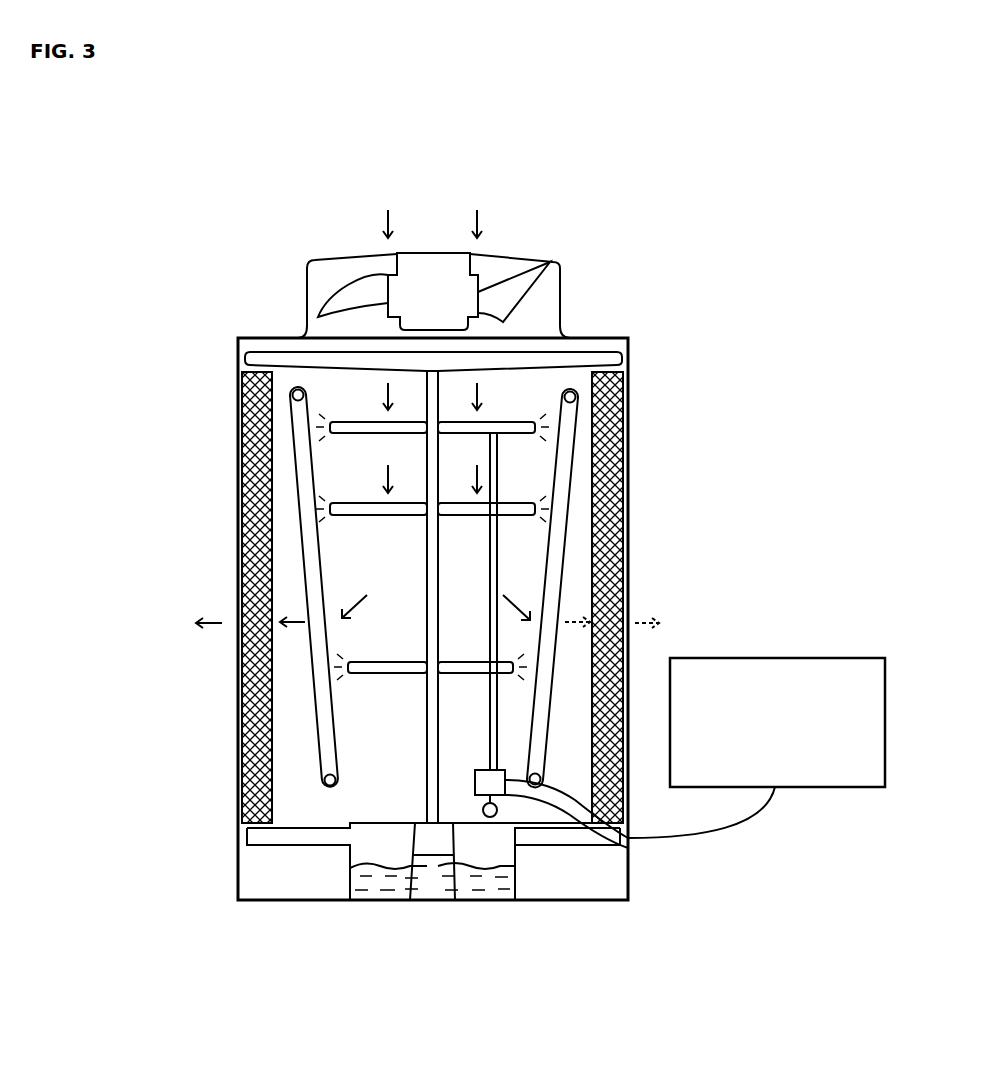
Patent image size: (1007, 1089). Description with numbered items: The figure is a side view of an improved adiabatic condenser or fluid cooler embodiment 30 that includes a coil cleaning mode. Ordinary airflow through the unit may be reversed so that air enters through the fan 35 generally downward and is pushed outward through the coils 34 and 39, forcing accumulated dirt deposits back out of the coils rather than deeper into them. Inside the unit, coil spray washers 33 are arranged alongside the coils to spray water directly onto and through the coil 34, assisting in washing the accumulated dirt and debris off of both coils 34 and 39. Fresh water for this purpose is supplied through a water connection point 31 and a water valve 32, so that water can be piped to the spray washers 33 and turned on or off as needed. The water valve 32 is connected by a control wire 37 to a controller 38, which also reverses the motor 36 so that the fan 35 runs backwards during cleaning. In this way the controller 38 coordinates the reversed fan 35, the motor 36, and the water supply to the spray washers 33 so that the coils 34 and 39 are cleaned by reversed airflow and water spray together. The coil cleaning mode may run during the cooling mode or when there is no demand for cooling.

The adiabatic condenser or fluid cooler embodiment 30 is at (205, 336).
The water connection point 31 is at (495, 815).
The water valve 32 is at (505, 785).
The coil spray washers 33 is at (557, 430).
The coil 34 is at (298, 493).
The fan 35 is at (520, 286).
The motor 36 is at (433, 262).
The control wire 37 is at (747, 820).
The controller 38 is at (780, 658).
The coil 39 is at (570, 412).